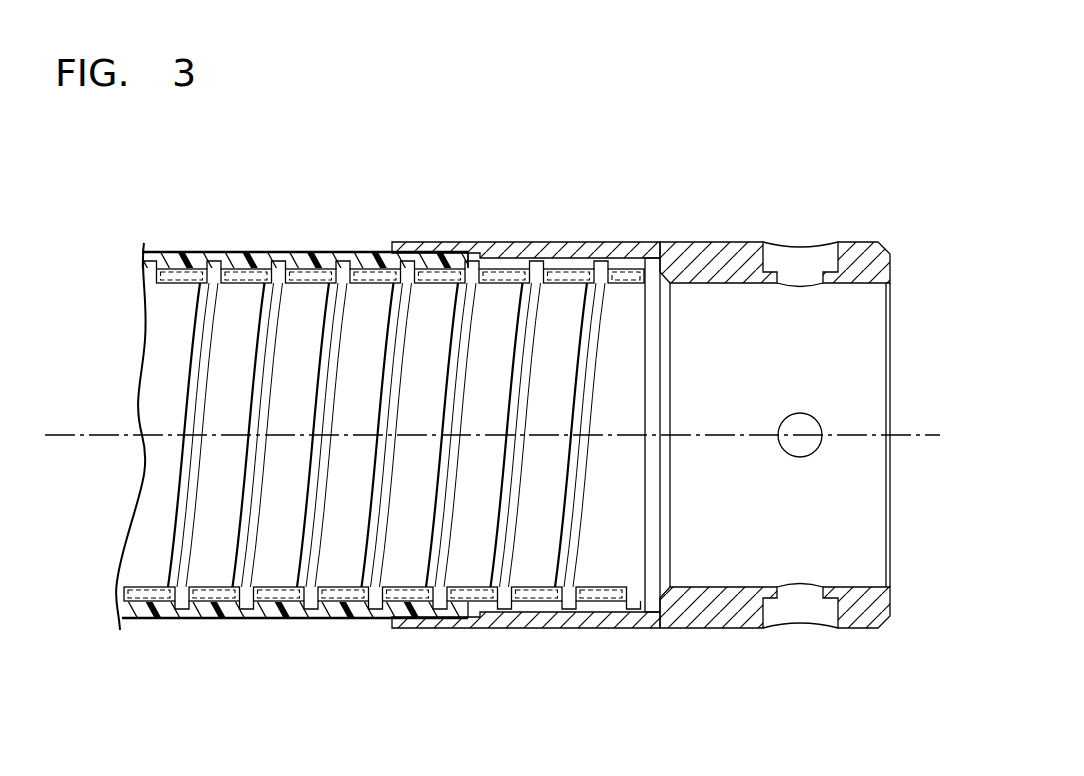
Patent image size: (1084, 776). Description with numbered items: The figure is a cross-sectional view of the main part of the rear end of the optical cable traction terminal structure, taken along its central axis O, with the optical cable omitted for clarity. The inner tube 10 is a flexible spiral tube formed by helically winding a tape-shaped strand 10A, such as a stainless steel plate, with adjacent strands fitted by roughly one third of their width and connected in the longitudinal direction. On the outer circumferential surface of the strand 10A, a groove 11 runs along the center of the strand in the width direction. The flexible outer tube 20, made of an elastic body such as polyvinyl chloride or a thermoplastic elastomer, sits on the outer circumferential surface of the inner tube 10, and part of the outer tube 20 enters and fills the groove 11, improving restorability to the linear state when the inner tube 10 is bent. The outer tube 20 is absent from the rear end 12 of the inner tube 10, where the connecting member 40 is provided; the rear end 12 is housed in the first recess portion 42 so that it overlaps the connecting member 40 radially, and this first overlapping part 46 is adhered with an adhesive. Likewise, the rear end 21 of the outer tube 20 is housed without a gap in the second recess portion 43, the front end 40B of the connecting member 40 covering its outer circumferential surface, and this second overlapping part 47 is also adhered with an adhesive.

The inner tube 10 is at (147, 628).
The strand 10A is at (209, 578).
The groove 11 is at (543, 270).
The rear end of the inner tube 12 is at (597, 578).
The outer tube 20 is at (227, 250).
The rear end of the outer tube 21 is at (456, 250).
The connecting member 40 is at (726, 640).
The front end of the connecting member 40B is at (417, 628).
The first recess portion 42 is at (648, 614).
The second recess portion 43 is at (455, 622).
The first overlapping part 46 is at (581, 232).
The second overlapping part 47 is at (398, 232).
The central axis O is at (940, 433).